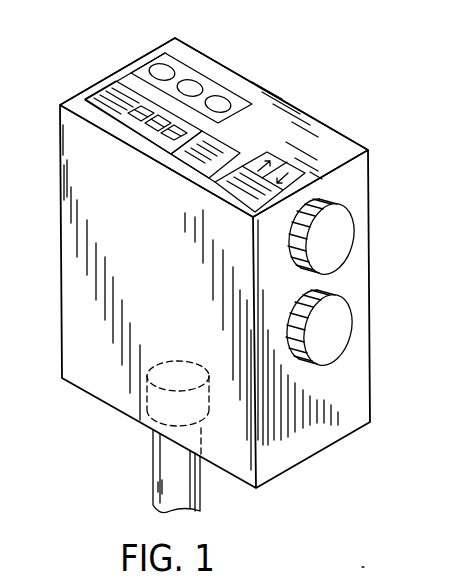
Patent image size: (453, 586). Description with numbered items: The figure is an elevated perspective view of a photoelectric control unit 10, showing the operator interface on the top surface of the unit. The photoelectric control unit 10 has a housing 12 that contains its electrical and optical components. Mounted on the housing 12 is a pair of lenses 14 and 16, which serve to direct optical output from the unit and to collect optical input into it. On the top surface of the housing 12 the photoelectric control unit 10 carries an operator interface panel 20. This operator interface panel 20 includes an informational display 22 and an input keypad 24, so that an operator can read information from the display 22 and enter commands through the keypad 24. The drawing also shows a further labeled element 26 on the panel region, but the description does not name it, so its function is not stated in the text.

The photoelectric control unit 10 is at (328, 447).
The housing 12 is at (62, 315).
The lens 14 is at (344, 233).
The lens 16 is at (339, 327).
The operator interface panel 20 is at (93, 78).
The informational display 22 is at (92, 110).
The input keypad 24 is at (226, 196).
The push buttons 26 is at (144, 69).